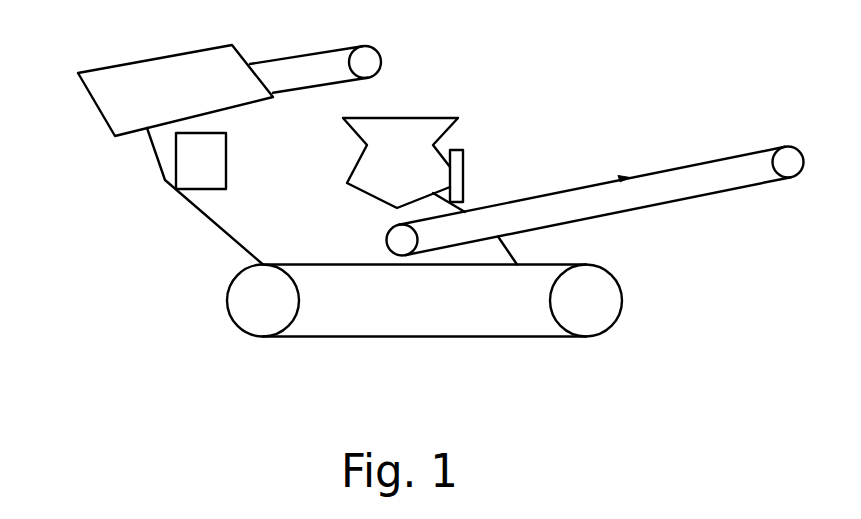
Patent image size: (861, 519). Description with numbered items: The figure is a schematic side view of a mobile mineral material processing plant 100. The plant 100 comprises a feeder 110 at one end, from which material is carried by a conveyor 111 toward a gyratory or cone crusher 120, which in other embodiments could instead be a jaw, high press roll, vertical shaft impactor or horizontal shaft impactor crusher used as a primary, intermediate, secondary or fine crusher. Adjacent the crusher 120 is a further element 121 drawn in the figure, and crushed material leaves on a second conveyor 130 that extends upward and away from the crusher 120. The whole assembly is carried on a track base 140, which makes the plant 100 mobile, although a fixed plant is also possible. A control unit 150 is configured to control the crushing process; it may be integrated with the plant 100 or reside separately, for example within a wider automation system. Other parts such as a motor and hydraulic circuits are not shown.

The mineral material processing plant 100 is at (188, 207).
The feeder 110 is at (87, 90).
The conveyor 111 is at (276, 95).
The gyratory or cone crusher 120 is at (347, 183).
The gate 121 is at (455, 119).
The conveyor 130 is at (750, 154).
The track base 140 is at (527, 336).
The control unit 150 is at (176, 164).